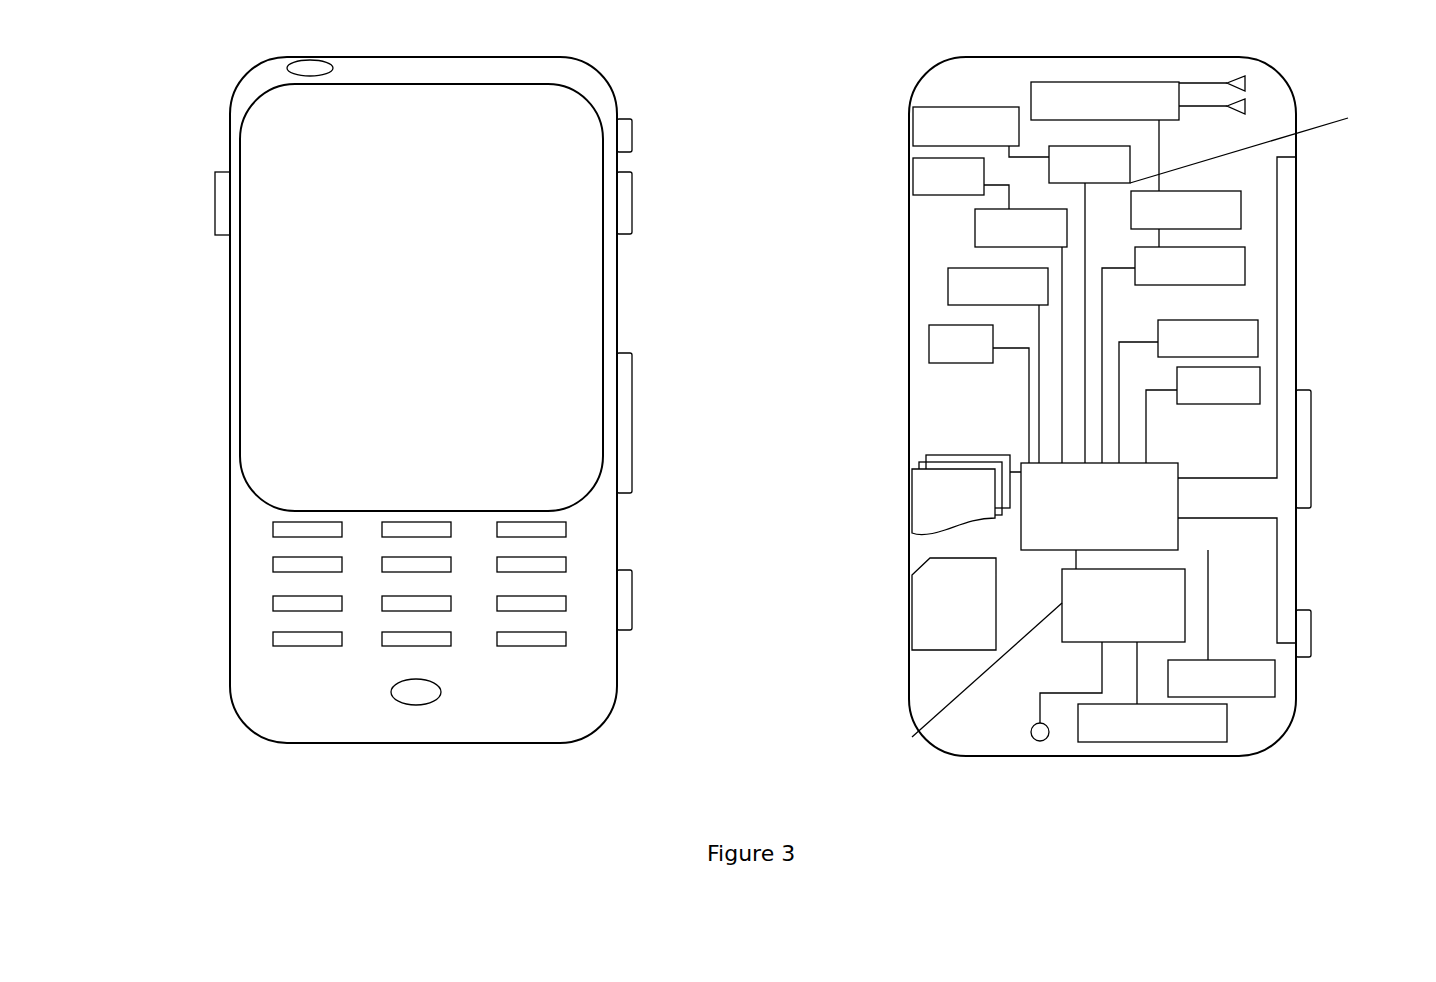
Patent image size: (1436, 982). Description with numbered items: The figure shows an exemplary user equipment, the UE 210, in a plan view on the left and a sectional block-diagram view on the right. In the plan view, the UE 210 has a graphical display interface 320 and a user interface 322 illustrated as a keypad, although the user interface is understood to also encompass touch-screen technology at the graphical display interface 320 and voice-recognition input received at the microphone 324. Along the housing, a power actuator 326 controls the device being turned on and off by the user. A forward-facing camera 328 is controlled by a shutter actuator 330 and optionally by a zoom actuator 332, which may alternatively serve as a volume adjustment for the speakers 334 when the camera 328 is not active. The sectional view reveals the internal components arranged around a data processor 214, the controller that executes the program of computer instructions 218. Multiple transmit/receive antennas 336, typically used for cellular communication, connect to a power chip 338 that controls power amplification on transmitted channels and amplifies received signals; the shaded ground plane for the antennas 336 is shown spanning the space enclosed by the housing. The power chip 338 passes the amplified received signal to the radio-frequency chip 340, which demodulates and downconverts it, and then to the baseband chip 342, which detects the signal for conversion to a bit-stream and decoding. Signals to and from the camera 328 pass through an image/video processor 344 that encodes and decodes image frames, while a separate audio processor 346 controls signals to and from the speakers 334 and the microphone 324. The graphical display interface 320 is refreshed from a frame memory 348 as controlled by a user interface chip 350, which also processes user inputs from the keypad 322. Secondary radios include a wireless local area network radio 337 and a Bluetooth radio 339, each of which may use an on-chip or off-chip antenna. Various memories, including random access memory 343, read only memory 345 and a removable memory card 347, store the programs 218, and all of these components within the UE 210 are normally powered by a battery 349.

The user equipment 210 is at (208, 95).
The data processor 214 is at (1030, 463).
The program of computer instructions 218 is at (925, 510).
The graphical display interface 320 is at (308, 273).
The user interface 322 is at (233, 565).
The microphone 324 is at (410, 698).
The power actuator 326 is at (632, 132).
The camera 328 is at (308, 58).
The shutter actuator 330 is at (628, 580).
The zoom actuator 332 is at (632, 378).
The speaker 334 is at (213, 165).
The transmit/receive antennas 336 is at (1240, 75).
The wireless local area network radio 337 is at (948, 285).
The power chip 338 is at (1077, 82).
The Bluetooth radio 339 is at (929, 348).
The radio-frequency chip 340 is at (1241, 200).
The baseband chip 342 is at (1245, 262).
The random access memory 343 is at (1258, 330).
The image/video processor 344 is at (1257, 144).
The read only memory 345 is at (1260, 380).
The audio processor 346 is at (975, 230).
The memory card 347 is at (925, 582).
The frame memory 348 is at (1147, 742).
The battery 349 is at (1258, 697).
The user interface chip 350 is at (1018, 656).